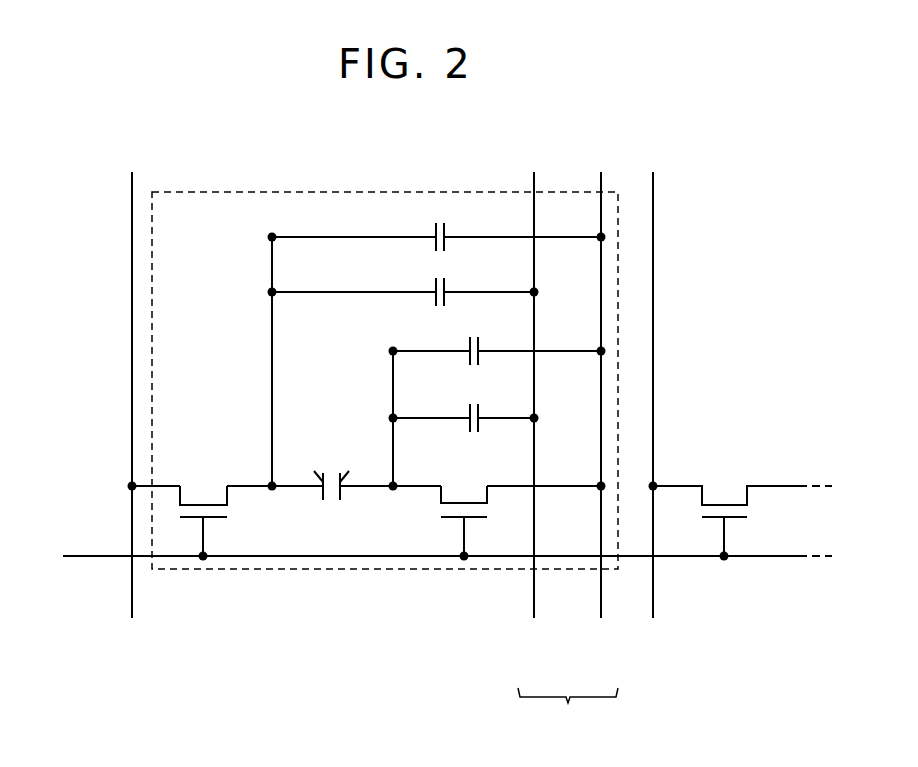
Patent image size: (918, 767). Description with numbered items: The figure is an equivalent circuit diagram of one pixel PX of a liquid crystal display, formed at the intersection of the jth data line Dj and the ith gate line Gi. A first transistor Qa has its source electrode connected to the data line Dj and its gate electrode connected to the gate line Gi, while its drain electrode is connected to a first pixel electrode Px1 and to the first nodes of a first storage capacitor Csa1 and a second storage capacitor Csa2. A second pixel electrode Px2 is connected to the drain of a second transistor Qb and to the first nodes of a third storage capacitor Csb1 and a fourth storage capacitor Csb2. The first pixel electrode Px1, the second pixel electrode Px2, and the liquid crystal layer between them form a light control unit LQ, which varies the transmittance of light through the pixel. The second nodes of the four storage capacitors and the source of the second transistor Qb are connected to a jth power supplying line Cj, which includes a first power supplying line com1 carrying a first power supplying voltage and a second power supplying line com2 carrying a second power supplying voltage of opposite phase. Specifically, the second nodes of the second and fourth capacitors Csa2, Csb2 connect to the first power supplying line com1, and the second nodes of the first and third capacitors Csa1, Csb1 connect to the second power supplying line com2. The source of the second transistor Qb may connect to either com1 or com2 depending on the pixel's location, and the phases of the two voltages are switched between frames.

The pixel PX is at (362, 569).
The jth data line Dj is at (131, 378).
The ith gate line Gi is at (434, 556).
The first power supplying line com1 is at (533, 427).
The second power supplying line com2 is at (601, 427).
The jth power supplying line Cj is at (568, 713).
The first storage capacitor Csa1 is at (436, 222).
The second storage capacitor Csa2 is at (403, 277).
The third storage capacitor Csb1 is at (497, 337).
The fourth storage capacitor Csb2 is at (463, 404).
The first transistor Qa is at (220, 507).
The second transistor Qb is at (480, 507).
The light control unit LQ is at (331, 503).
The first pixel electrode Px1 is at (312, 472).
The second pixel electrode Px2 is at (352, 472).